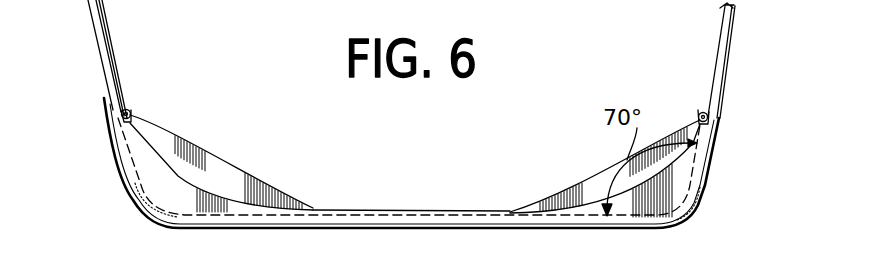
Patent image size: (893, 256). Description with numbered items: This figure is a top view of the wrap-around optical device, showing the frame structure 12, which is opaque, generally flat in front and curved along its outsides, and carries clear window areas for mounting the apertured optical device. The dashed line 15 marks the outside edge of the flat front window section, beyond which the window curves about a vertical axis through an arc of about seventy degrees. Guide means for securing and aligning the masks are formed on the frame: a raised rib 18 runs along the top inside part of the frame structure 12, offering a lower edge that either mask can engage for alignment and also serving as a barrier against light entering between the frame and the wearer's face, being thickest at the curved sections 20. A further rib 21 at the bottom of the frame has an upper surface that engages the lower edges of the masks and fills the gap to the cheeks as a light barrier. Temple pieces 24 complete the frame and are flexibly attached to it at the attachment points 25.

The frame structure 12 is at (420, 222).
The dashed line 15 is at (584, 11).
The raised rib 18 is at (408, 210).
The curved sections 20 is at (173, 190).
The further rib 21 is at (164, 140).
The temple pieces 24 is at (91, 26).
The flexible attachment 25 is at (128, 110).